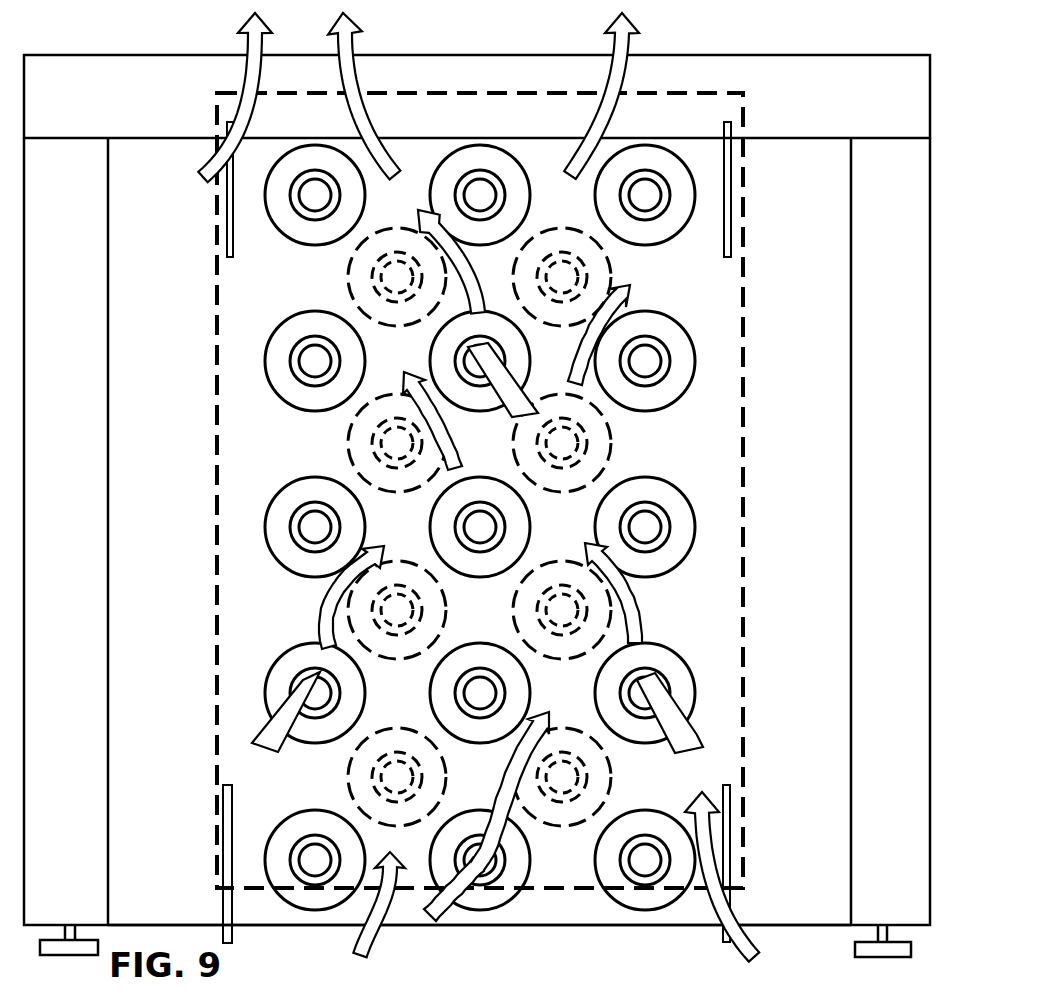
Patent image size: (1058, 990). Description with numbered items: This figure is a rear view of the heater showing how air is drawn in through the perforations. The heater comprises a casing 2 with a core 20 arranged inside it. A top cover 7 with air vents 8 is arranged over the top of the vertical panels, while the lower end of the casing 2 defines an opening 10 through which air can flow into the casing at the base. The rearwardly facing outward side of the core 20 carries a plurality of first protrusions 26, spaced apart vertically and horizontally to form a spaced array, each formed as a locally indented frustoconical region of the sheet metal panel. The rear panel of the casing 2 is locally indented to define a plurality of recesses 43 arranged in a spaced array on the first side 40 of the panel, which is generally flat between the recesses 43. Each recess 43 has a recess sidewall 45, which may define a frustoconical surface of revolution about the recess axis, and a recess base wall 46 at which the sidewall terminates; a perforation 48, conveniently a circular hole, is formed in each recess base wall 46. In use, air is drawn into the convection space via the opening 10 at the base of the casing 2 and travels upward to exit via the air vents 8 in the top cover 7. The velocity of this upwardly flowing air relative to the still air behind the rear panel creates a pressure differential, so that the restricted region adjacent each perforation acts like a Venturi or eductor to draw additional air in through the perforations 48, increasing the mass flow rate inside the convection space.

The casing 2 is at (99, 20).
The top cover 7 is at (822, 55).
The air vents 8 is at (355, 55).
The opening 10 is at (566, 922).
The core 20 is at (752, 298).
The first protrusions 26 is at (560, 497).
The first side 40 is at (664, 460).
The recesses 43 is at (682, 327).
The recess sidewall 45 is at (677, 543).
The recess base wall 46 is at (652, 548).
The perforation 48 is at (662, 682).